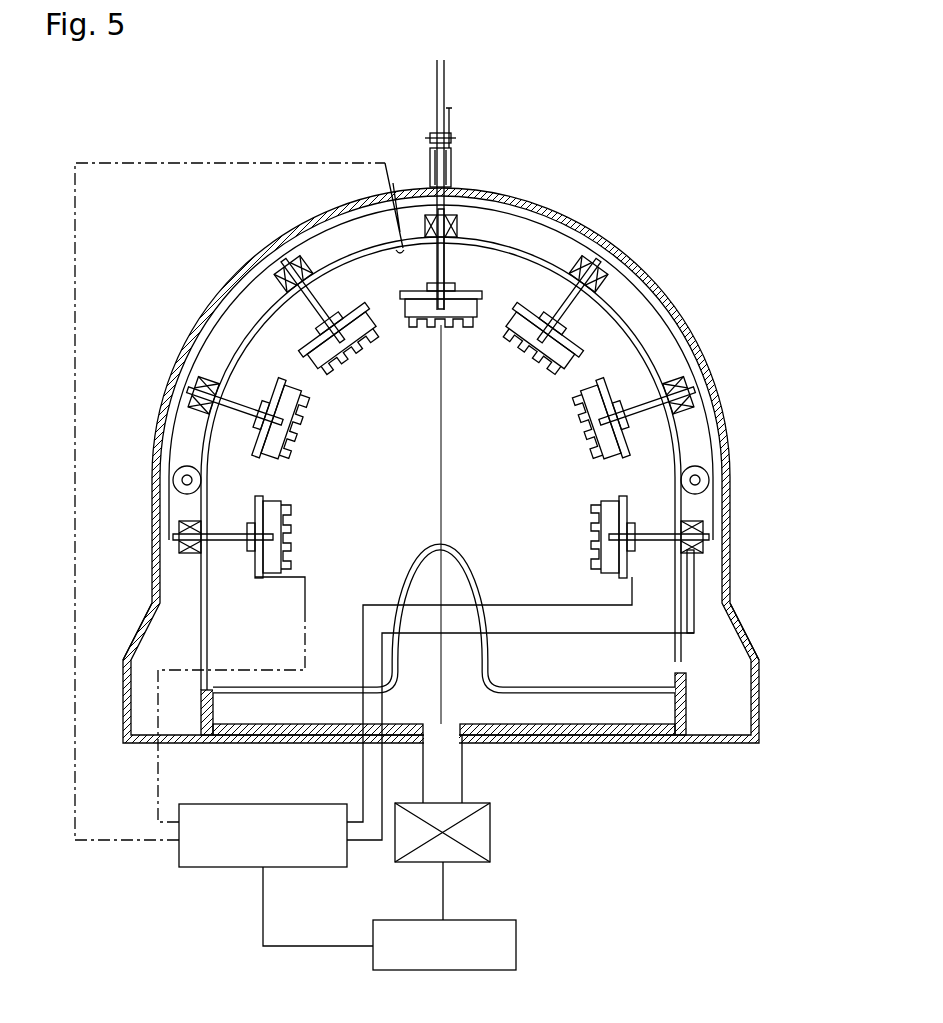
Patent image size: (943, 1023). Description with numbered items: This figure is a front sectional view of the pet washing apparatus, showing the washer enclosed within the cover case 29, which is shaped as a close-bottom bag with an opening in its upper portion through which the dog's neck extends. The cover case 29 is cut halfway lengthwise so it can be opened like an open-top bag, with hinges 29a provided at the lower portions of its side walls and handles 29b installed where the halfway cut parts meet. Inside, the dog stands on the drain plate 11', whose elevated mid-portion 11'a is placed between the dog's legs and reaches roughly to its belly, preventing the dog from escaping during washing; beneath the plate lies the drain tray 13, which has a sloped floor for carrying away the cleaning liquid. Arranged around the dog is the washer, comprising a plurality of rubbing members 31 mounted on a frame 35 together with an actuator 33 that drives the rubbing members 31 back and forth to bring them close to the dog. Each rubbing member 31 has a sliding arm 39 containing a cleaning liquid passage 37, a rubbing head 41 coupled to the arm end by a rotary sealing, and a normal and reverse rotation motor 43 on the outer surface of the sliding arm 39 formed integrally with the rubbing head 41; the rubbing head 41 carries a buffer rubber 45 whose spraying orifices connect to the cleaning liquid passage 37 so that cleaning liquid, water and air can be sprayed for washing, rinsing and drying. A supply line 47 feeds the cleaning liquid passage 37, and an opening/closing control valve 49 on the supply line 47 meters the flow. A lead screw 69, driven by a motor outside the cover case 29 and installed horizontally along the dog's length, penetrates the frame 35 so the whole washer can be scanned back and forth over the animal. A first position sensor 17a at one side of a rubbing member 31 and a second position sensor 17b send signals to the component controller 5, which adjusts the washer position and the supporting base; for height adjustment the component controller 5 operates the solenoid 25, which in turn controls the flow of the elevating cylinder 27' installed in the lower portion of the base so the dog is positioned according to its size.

The component controller 5 is at (207, 867).
The drain plate 11' is at (446, 647).
The elevated mid-portion 11'a is at (452, 577).
The drain tray 13 is at (583, 745).
The first position sensor 17a is at (300, 576).
The second position sensor 17b is at (243, 481).
The solenoid 25 is at (518, 947).
The elevating cylinder 27' is at (479, 832).
The cover case 29 is at (700, 303).
The hinges 29a is at (150, 598).
The handles 29b is at (456, 172).
The rubbing members 31 is at (308, 312).
The actuator 33 is at (285, 288).
The frame 35 is at (240, 336).
The cleaning liquid passage 37 is at (302, 300).
The sliding arm 39 is at (338, 252).
The rubbing head 41 is at (368, 312).
The normal and reverse rotation motor 43 is at (313, 332).
The buffer rubber 45 is at (350, 342).
The supply line 47 is at (446, 89).
The opening/closing control valve 49 is at (436, 136).
The lead screw 69 is at (712, 463).